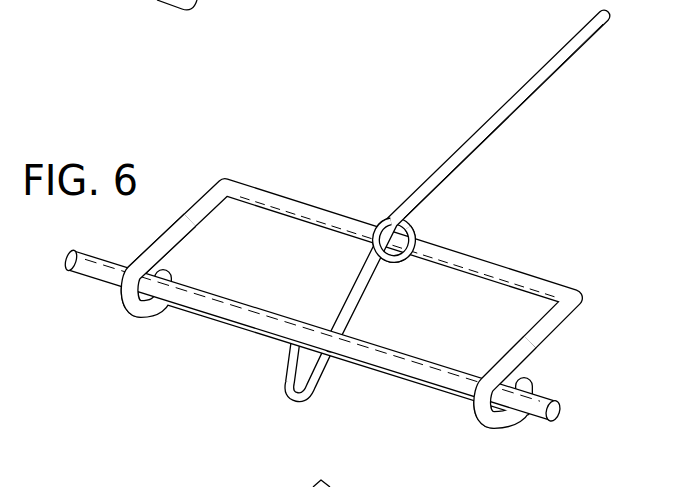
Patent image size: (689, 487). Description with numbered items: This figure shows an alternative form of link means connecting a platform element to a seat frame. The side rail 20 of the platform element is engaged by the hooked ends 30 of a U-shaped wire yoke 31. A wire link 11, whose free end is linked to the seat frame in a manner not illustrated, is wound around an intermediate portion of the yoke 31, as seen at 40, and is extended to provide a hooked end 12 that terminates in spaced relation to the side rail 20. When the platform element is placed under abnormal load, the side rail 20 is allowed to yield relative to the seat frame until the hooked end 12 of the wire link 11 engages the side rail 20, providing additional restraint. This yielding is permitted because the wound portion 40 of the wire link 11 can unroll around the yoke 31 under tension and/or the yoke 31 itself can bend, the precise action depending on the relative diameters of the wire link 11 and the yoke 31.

The wire link 11 is at (515, 111).
The hooked end 12 is at (288, 388).
The side rail 20 is at (418, 374).
The hooked ends 30 is at (126, 305).
The U-shaped wire yoke 31 is at (525, 270).
The wound portion 40 is at (377, 211).